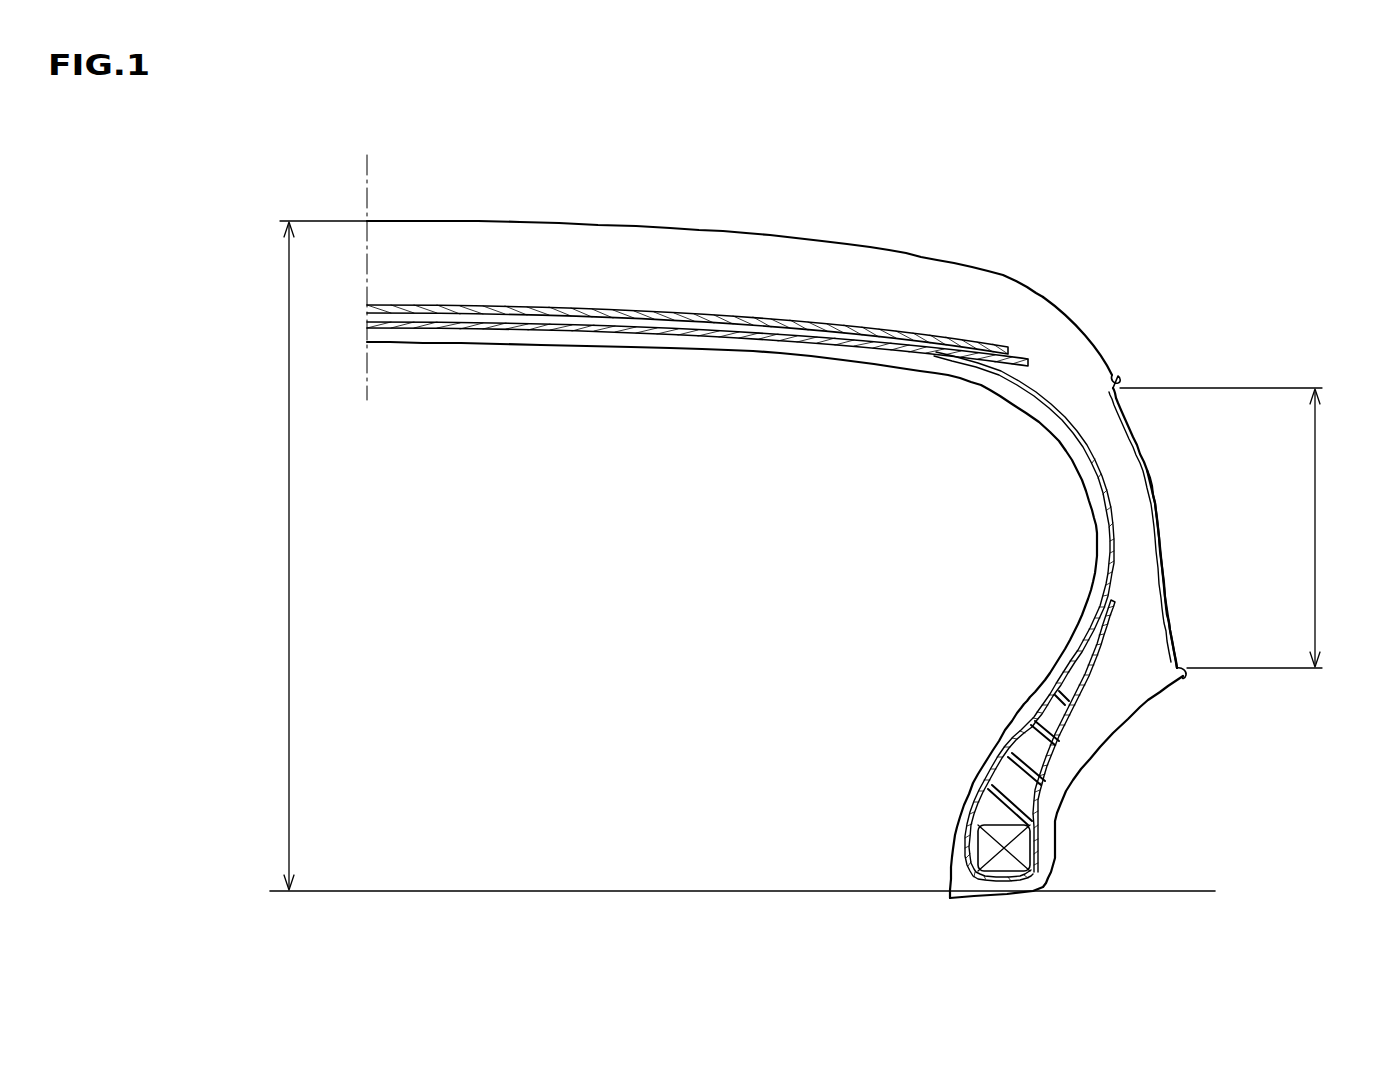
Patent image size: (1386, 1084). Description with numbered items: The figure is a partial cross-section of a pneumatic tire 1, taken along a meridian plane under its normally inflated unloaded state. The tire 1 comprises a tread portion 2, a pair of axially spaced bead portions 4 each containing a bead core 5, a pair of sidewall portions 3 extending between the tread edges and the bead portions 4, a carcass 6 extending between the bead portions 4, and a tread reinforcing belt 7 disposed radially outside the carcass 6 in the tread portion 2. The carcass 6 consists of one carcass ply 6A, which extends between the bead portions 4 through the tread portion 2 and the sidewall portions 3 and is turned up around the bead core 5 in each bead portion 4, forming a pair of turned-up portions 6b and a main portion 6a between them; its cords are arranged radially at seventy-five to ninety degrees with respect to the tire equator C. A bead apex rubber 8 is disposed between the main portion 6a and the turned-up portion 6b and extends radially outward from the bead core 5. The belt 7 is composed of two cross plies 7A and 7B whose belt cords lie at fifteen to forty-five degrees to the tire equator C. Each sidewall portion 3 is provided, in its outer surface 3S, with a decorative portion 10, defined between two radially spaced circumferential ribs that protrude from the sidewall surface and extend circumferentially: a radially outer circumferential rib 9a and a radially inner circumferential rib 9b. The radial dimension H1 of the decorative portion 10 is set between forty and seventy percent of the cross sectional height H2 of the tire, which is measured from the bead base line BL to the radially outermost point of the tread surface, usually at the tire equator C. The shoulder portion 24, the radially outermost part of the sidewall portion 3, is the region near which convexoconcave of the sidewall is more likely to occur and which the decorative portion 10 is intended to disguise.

The pneumatic tire 1 is at (823, 213).
The tread portion 2 is at (683, 222).
The sidewall portion 3 is at (1159, 466).
The outer surface 3S is at (1173, 598).
The bead portion 4 is at (946, 815).
The bead core 5 is at (1031, 848).
The carcass 6 is at (1065, 428).
The carcass ply 6A is at (1202, 732).
The main portion 6a is at (1046, 700).
The turned-up portion 6b is at (1040, 752).
The tread reinforcing belt 7 is at (1160, 178).
The belt ply 7A is at (1019, 357).
The belt ply 7B is at (962, 342).
The bead apex rubber 8 is at (1013, 789).
The radially outer circumferential rib 9a is at (1119, 378).
The radially inner circumferential rib 9b is at (1187, 677).
The decorative portion 10 is at (1166, 549).
The shoulder portion 24 is at (1096, 342).
The radial dimension H1 is at (1240, 528).
The cross sectional height H2 is at (305, 555).
The bead base line BL is at (582, 891).
The tire equator C is at (367, 266).